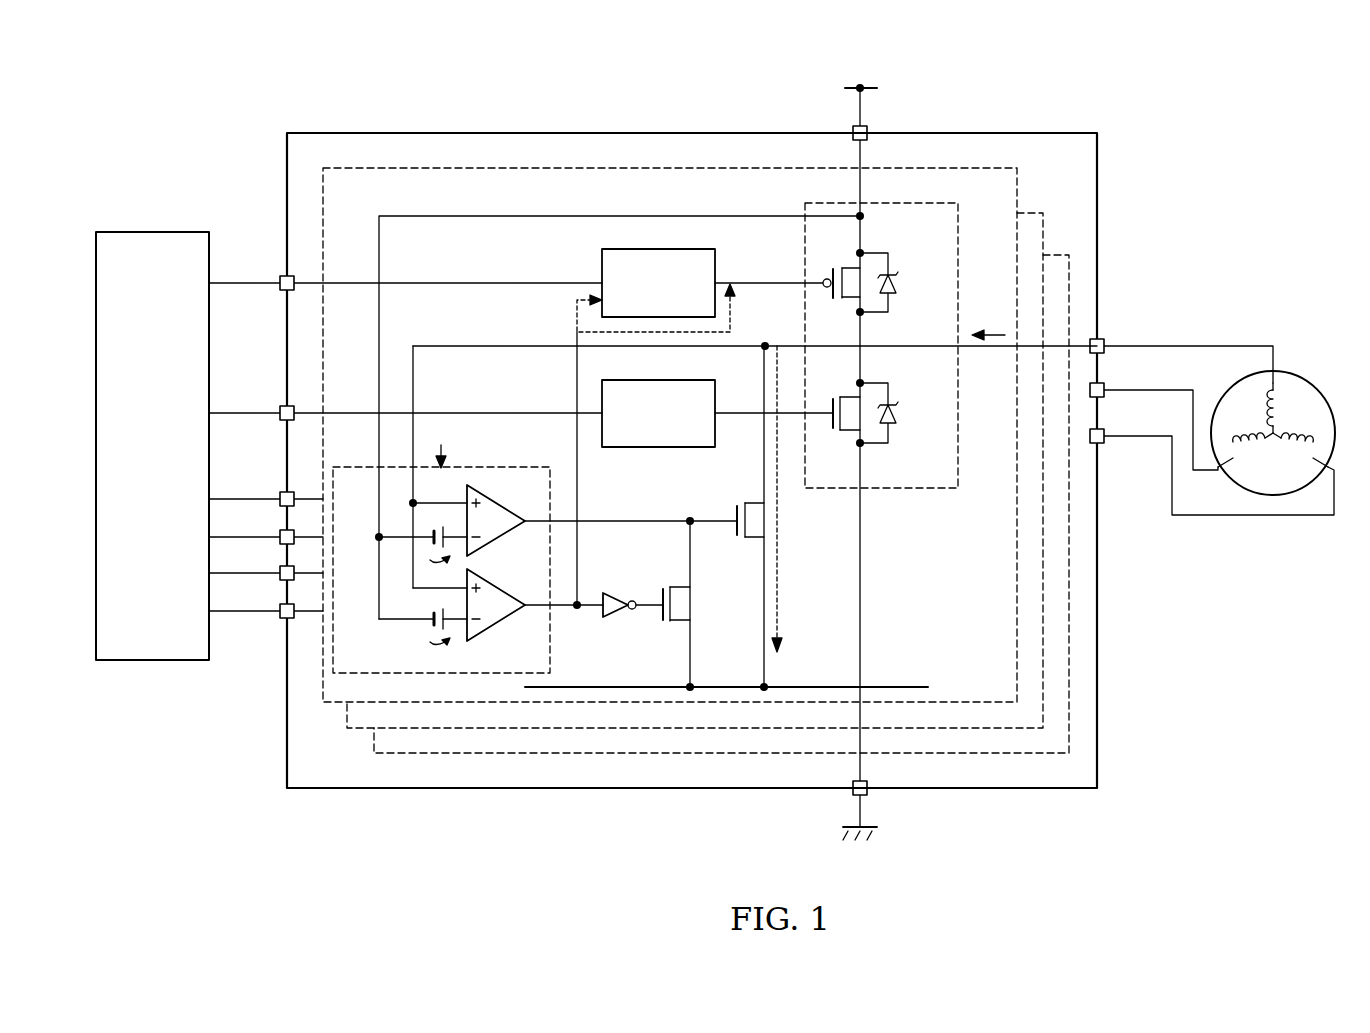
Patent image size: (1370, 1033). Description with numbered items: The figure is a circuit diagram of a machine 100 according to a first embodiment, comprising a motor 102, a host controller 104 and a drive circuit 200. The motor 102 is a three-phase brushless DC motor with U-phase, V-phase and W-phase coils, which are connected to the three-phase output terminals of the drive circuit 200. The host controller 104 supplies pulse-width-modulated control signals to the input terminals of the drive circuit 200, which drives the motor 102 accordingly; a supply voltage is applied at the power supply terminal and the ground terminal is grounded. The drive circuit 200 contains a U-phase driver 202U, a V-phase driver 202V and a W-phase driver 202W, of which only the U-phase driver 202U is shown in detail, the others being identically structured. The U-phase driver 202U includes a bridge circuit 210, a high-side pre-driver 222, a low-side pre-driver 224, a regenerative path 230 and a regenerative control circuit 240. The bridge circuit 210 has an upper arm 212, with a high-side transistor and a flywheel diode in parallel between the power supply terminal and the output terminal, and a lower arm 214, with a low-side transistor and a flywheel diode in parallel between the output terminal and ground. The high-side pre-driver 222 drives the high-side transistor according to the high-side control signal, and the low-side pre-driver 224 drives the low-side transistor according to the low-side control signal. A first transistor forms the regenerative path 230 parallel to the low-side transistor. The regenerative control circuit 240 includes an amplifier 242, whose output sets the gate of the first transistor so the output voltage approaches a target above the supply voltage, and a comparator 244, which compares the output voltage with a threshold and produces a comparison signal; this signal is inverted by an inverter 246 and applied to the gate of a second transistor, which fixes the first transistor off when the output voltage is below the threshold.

The machine 100 is at (1333, 70).
The motor 102 is at (1320, 362).
The host controller 104 is at (151, 232).
The drive circuit 200 is at (706, 133).
The U-phase driver 202U is at (932, 168).
The V-phase driver 202V is at (1027, 213).
The W-phase driver 202W is at (1070, 272).
The bridge circuit 210 is at (934, 203).
The upper arm 212 is at (892, 253).
The lower arm 214 is at (905, 384).
The high-side pre-driver 222 is at (665, 249).
The low-side pre-driver 224 is at (665, 382).
The regenerative path 230 is at (779, 588).
The regenerative control circuit 240 is at (500, 468).
The amplifier 242 is at (488, 503).
The comparator 244 is at (488, 586).
The inverter 246 is at (622, 583).